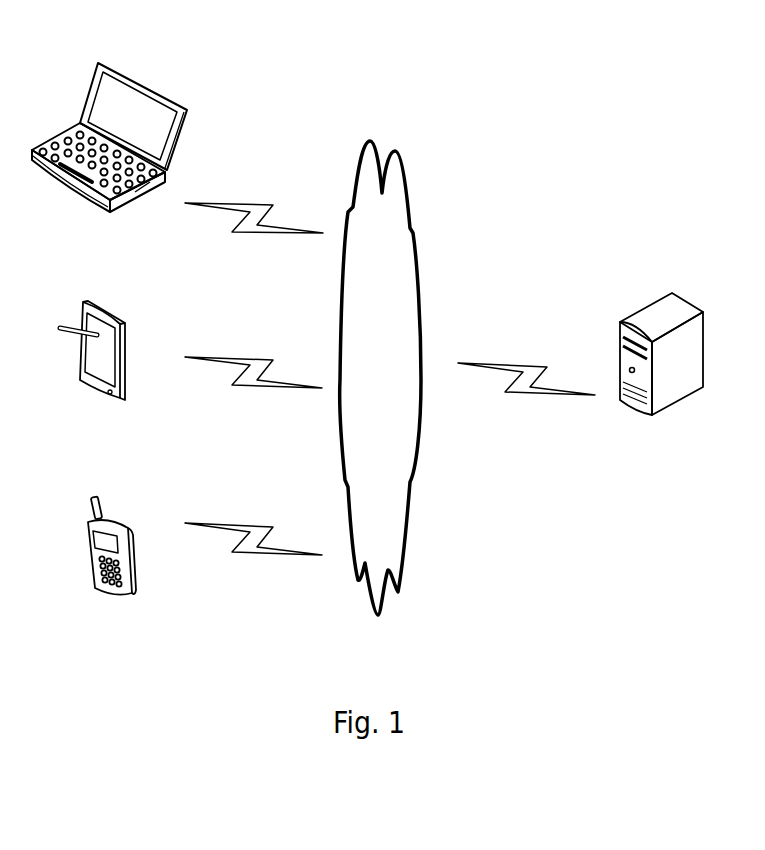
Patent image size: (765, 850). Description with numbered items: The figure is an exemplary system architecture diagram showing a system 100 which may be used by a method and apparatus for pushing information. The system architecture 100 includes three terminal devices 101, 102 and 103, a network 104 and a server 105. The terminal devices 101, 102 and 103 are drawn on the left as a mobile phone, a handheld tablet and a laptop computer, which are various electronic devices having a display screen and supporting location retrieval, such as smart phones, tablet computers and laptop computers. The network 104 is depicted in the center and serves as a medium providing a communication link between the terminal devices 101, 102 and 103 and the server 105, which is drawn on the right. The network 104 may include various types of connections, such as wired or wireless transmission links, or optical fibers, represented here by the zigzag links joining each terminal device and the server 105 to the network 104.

The system architecture 100 is at (580, 53).
The terminal device 101 is at (112, 566).
The terminal device 102 is at (92, 371).
The terminal device 103 is at (109, 156).
The network 104 is at (380, 378).
The server 105 is at (661, 376).